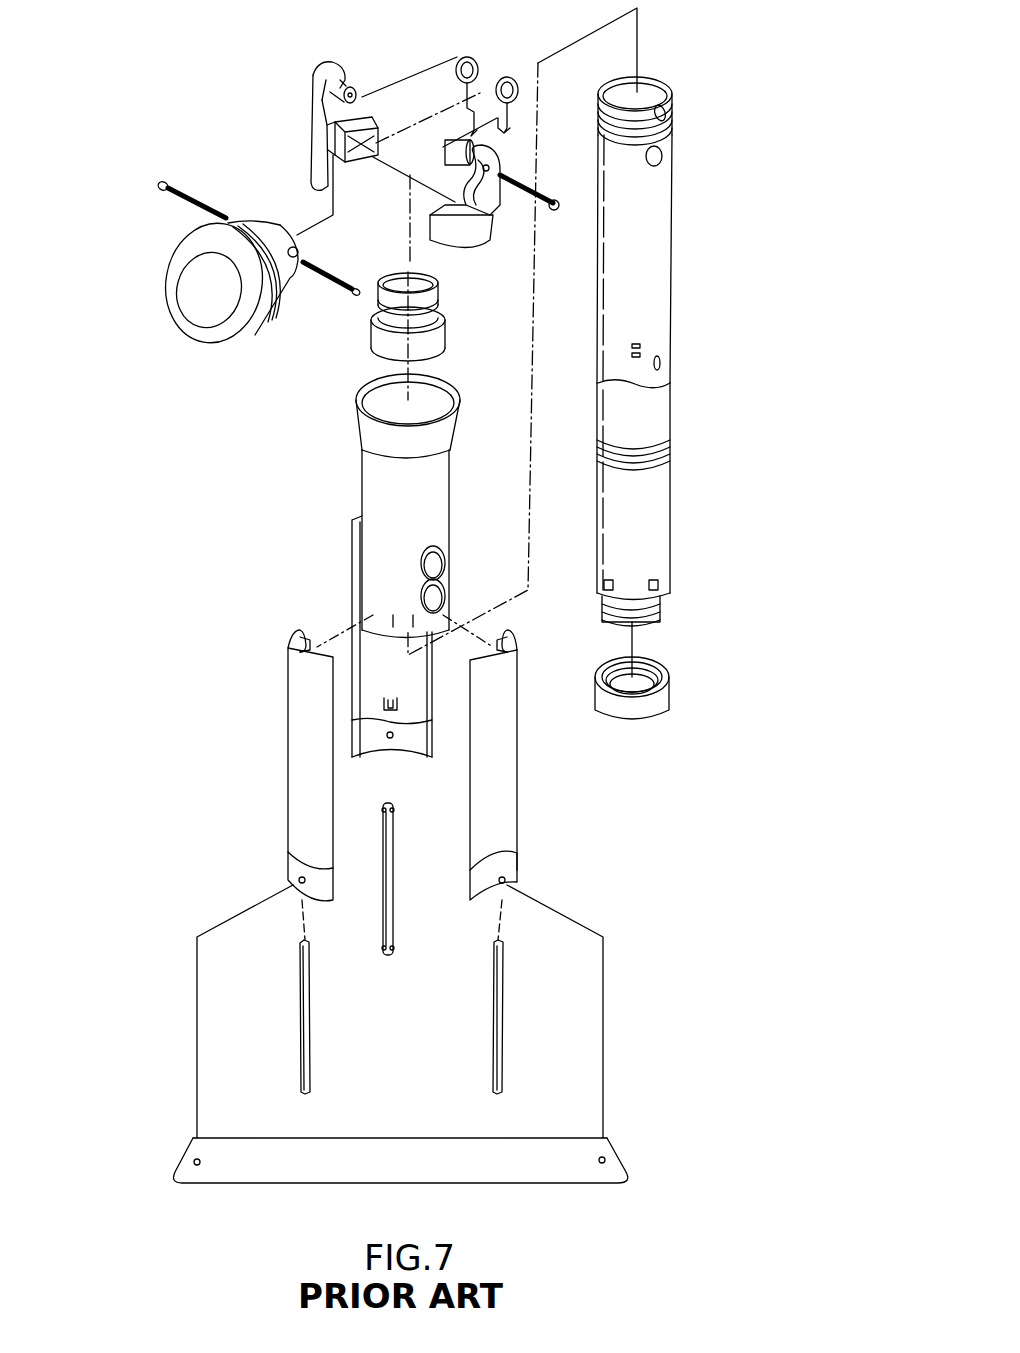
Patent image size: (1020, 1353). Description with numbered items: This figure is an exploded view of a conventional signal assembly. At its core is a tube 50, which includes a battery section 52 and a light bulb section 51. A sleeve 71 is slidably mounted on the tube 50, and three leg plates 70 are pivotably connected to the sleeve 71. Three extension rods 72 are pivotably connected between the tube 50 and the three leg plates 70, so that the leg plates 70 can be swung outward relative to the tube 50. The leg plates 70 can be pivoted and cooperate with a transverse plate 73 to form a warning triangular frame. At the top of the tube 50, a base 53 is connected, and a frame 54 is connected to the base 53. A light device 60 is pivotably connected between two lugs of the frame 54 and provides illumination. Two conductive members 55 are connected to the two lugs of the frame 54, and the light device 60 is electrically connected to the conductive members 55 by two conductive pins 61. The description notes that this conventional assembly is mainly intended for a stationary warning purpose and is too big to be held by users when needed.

The tube 50 is at (692, 398).
The light bulb section 51 is at (672, 465).
The battery section 52 is at (674, 190).
The base 53 is at (447, 328).
The frame 54 is at (503, 168).
The conductive members 55 is at (508, 82).
The light device 60 is at (183, 308).
The conductive pins 61 is at (158, 184).
The leg plates 70 is at (507, 837).
The sleeve 71 is at (372, 467).
The extension rods 72 is at (500, 970).
The transverse plate 73 is at (590, 1147).